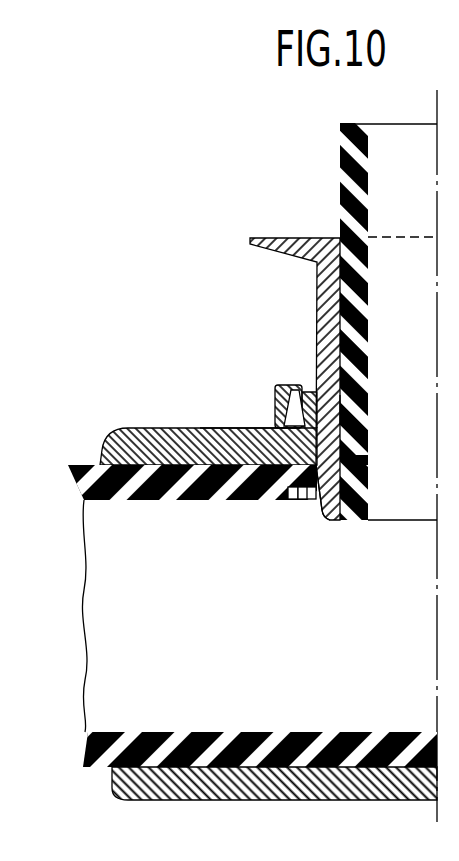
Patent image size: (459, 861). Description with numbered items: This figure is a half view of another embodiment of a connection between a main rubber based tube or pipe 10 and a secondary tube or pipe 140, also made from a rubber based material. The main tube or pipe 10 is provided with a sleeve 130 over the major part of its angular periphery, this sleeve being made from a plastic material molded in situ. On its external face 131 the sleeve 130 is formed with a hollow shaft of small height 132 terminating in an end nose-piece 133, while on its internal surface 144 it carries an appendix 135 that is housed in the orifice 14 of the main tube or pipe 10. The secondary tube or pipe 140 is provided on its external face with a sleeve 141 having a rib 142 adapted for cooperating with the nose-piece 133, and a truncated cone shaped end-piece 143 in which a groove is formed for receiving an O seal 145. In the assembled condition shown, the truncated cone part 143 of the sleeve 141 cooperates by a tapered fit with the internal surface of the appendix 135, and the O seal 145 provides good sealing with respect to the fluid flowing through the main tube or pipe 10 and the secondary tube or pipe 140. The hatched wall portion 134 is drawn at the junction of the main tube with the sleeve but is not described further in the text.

The main rubber based tube or pipe 10 is at (92, 770).
The orifice 14 is at (293, 502).
The sleeve 130 is at (303, 786).
The external face 131 is at (148, 428).
The hollow shaft of small height 132 is at (275, 395).
The end nose-piece 133 is at (292, 385).
The flange 134 is at (190, 500).
The appendix 135 is at (305, 505).
The secondary tube or pipe 140 is at (340, 158).
The sleeve 141 is at (317, 277).
The rib 142 is at (364, 409).
The truncated cone shaped end-piece 143 is at (320, 520).
The internal surface 144 is at (366, 460).
The O seal 145 is at (244, 428).